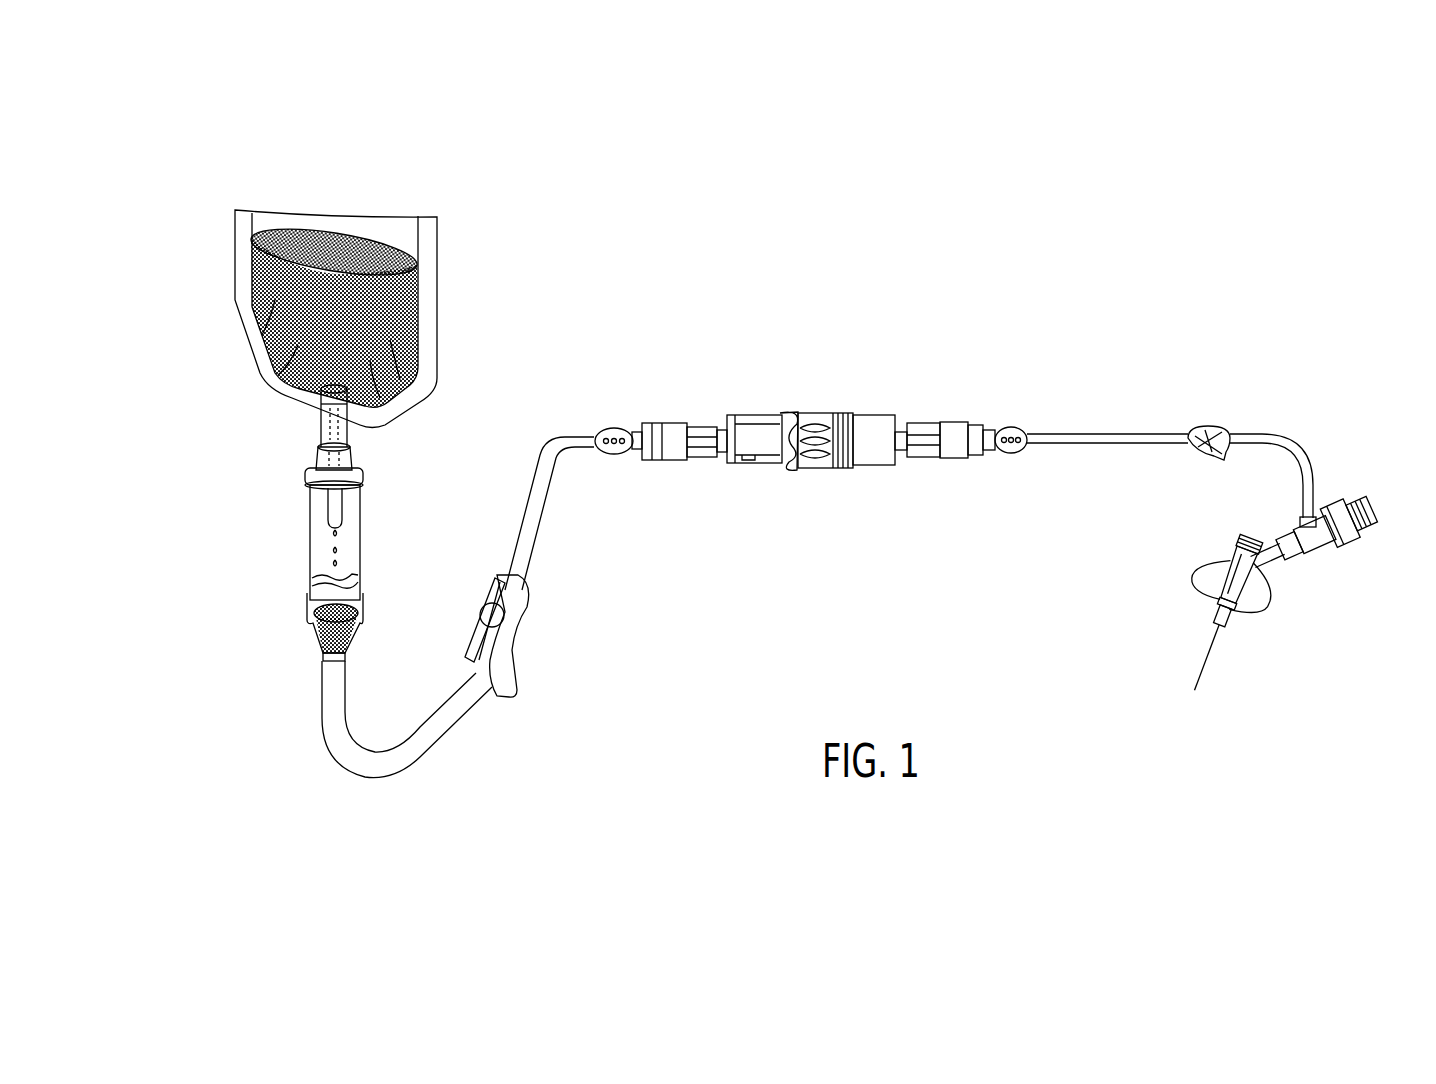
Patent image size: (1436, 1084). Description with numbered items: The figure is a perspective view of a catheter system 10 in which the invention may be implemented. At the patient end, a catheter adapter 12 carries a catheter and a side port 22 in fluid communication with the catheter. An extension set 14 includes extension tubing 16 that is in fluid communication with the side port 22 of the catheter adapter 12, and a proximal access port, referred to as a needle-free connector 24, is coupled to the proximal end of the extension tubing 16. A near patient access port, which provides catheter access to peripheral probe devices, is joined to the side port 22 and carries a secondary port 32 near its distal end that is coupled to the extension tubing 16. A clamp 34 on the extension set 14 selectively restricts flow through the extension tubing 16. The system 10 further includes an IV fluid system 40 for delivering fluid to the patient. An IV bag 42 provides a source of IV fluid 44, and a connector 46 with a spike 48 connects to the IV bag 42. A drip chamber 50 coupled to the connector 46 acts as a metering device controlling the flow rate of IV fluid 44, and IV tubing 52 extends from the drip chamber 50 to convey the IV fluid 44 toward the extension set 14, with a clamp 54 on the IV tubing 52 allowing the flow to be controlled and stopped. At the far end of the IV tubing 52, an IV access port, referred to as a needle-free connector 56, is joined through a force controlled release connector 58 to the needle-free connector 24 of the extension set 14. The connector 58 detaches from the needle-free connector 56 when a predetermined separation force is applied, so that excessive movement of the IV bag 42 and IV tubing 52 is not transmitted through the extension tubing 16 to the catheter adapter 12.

The catheter system 10 is at (1070, 300).
The catheter adapter 12 is at (1219, 590).
The extension set 14 is at (1070, 407).
The extension tubing 16 is at (1283, 436).
The side port 22 is at (1319, 525).
The proximal access port 24 is at (927, 405).
The secondary port 32 is at (1304, 517).
The clamp 34 is at (1208, 428).
The IV fluid system 40 is at (351, 291).
The IV bag 42 is at (233, 263).
The IV fluid 44 is at (373, 245).
The connector 46 is at (320, 427).
The spike 48 is at (350, 433).
The drip chamber 50 is at (362, 543).
The IV tubing 52 is at (542, 495).
The clamp 54 is at (534, 627).
The IV access port 56 is at (662, 403).
The force controlled release connector 58 is at (822, 384).